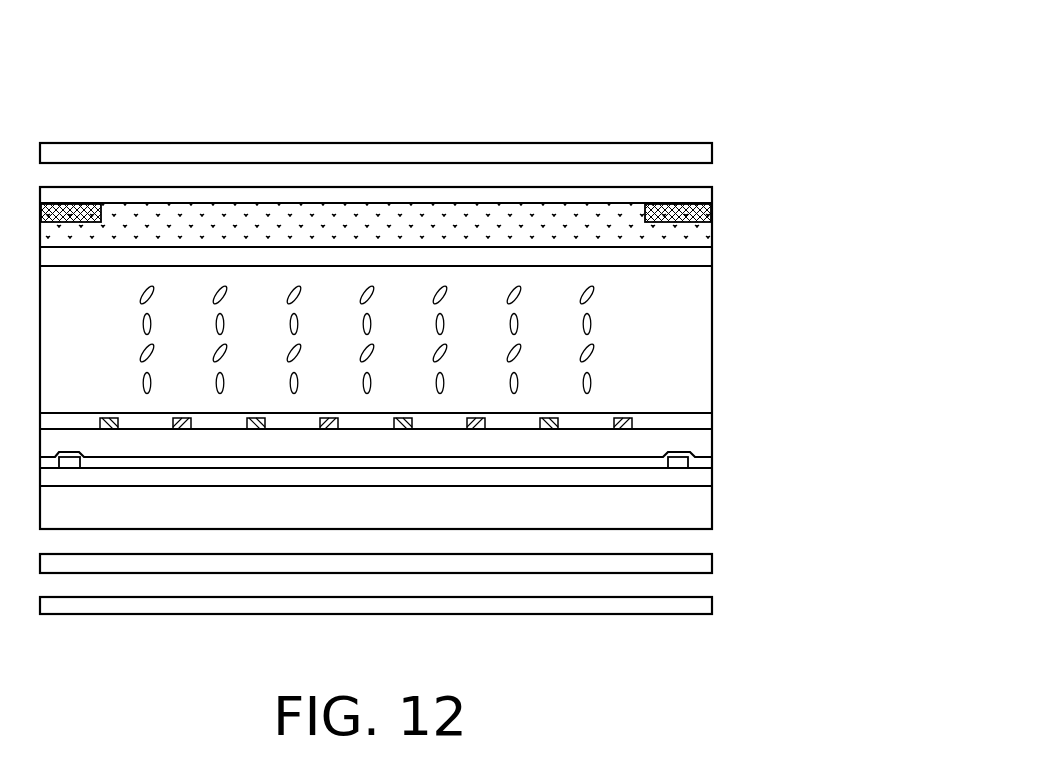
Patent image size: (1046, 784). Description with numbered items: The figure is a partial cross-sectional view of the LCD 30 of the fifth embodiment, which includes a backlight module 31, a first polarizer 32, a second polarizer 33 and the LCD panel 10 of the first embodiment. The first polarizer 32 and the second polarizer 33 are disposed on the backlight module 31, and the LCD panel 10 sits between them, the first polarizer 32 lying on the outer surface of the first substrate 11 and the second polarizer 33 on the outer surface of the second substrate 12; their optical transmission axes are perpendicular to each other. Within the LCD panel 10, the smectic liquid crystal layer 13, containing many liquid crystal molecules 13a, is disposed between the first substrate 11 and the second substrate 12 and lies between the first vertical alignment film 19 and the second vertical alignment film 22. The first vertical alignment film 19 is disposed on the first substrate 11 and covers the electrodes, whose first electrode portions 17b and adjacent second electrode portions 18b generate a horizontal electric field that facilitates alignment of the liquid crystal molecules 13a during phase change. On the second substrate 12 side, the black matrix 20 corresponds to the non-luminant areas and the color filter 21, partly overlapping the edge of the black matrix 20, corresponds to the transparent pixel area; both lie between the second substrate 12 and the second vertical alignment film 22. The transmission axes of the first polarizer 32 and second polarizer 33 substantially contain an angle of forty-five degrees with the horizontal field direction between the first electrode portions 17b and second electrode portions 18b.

The LCD 30 is at (898, 58).
The LCD panel 10 is at (690, 168).
The second polarizer 33 is at (703, 155).
The second substrate 12 is at (703, 196).
The black matrix 20 is at (712, 210).
The color filter 21 is at (697, 236).
The second vertical alignment film 22 is at (700, 259).
The smectic liquid crystal layer 13 is at (702, 303).
The liquid crystal molecules 13a is at (592, 353).
The first vertical alignment film 19 is at (698, 422).
The second electrode portion 18b is at (632, 421).
The first electrode portion 17b is at (553, 429).
The first substrate 11 is at (697, 508).
The first polarizer 32 is at (697, 563).
The backlight module 31 is at (697, 605).